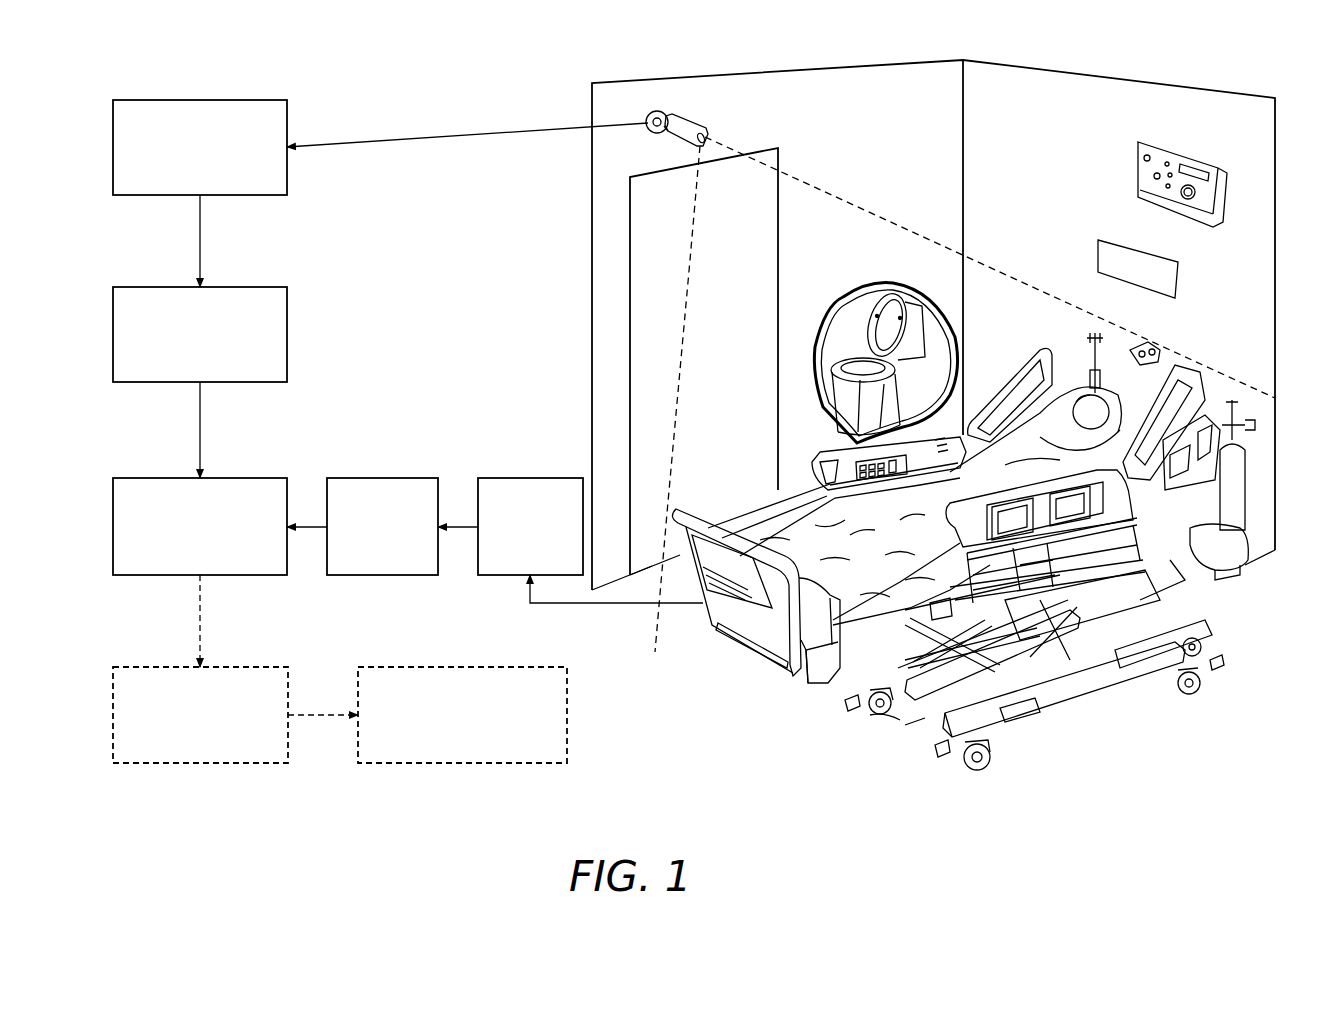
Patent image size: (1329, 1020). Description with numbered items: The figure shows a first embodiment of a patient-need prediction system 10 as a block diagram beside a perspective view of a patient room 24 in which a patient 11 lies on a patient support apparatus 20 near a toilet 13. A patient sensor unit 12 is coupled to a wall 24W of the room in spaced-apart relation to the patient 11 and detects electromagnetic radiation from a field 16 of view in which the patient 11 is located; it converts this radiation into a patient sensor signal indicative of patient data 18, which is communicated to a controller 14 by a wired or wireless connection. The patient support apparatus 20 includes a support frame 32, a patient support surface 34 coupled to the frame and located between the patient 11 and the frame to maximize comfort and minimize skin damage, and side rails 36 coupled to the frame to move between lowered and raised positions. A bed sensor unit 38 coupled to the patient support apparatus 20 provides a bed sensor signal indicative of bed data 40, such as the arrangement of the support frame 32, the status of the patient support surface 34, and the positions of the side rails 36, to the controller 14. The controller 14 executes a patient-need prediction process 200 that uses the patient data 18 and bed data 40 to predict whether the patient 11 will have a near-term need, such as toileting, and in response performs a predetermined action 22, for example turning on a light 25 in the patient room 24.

The patient-need prediction system 10 is at (1287, 147).
The patient 11 is at (1118, 446).
The patient sensor unit 12 is at (160, 100).
The toilet 13 is at (860, 350).
The controller 14 is at (160, 478).
The field of view 16 is at (877, 215).
The patient data 18 is at (160, 287).
The patient support apparatus 20 is at (817, 685).
The predetermined action 22 is at (390, 765).
The patient room 24 is at (1035, 108).
The wall 24W is at (876, 153).
The light 25 is at (1150, 262).
The support frame 32 is at (1182, 592).
The patient support surface 34 is at (883, 625).
The side rails 36 is at (950, 424).
The bed sensor unit 38 is at (525, 478).
The bed data 40 is at (375, 478).
The patient-need prediction process 200 is at (180, 768).